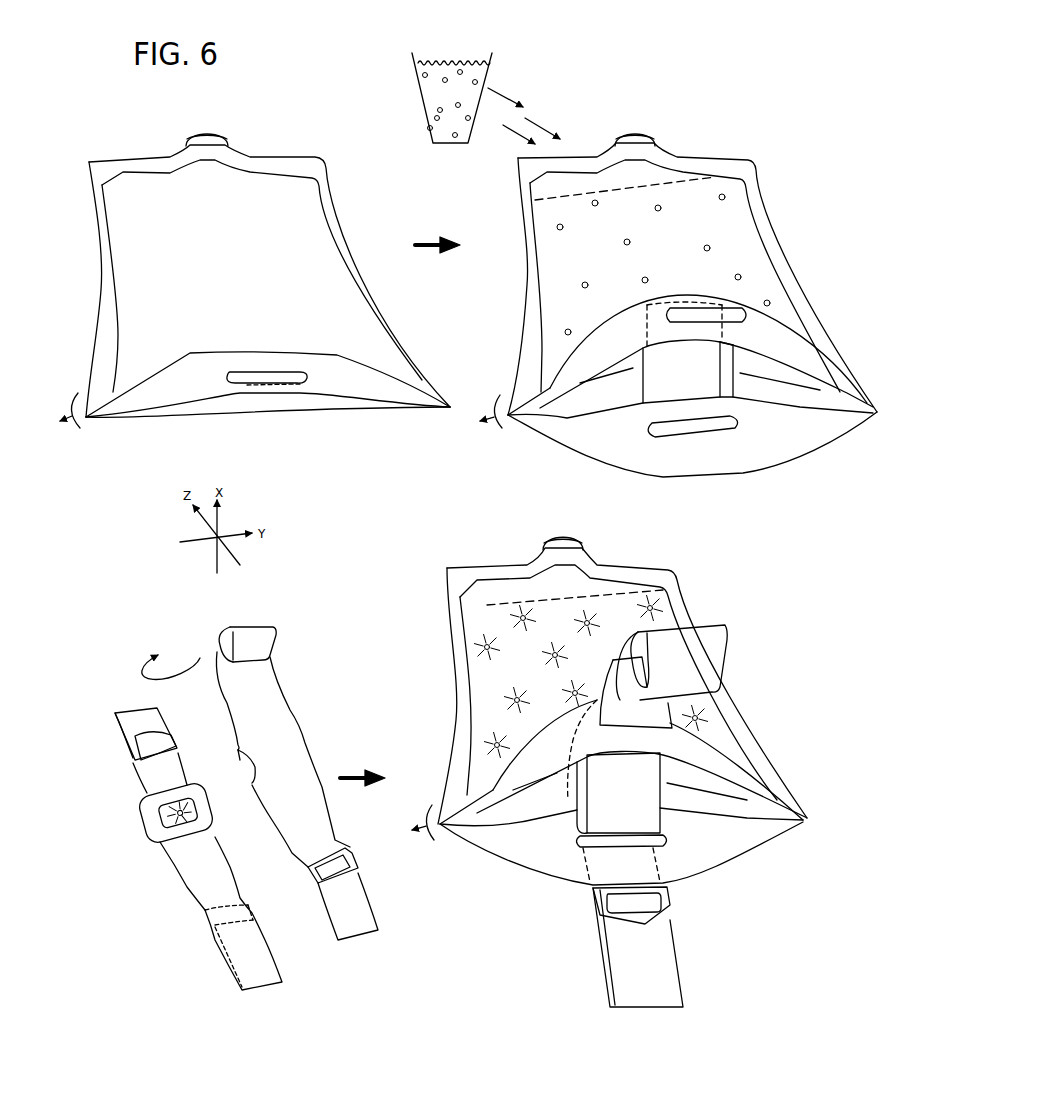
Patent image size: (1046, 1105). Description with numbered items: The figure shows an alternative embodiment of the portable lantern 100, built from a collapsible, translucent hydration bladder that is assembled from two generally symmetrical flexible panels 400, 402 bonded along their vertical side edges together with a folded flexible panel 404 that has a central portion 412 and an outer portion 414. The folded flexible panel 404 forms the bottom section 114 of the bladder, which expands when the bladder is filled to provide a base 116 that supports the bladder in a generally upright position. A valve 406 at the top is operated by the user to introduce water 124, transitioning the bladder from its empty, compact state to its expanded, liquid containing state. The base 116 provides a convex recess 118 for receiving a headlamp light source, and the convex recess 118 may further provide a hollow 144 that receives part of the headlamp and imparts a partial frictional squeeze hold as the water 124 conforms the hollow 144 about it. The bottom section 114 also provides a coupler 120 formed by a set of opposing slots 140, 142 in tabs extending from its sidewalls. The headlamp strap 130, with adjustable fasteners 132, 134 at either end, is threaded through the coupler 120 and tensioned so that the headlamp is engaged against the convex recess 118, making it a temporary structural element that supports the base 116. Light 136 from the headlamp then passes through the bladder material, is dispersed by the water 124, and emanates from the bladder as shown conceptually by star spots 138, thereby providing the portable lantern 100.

The portable lantern 100 is at (748, 576).
The bottom section 114 is at (267, 616).
The base 116 is at (156, 371).
The convex recess 118 is at (810, 415).
The coupler 120 is at (258, 386).
The water 124 is at (553, 222).
The strap 130 is at (460, 782).
The fastener 132 is at (168, 738).
The fastener 134 is at (352, 855).
The light 136 is at (192, 813).
The star spots 138 is at (480, 645).
The slot 140 is at (690, 311).
The slot 142 is at (738, 430).
The hollow 144 is at (688, 372).
The flexible panel 400 is at (283, 406).
The flexible panel 402 is at (166, 418).
The folded flexible panel 404 is at (479, 559).
The valve 406 is at (198, 131).
The central portion 412 is at (268, 353).
The outer portion 414 is at (363, 377).